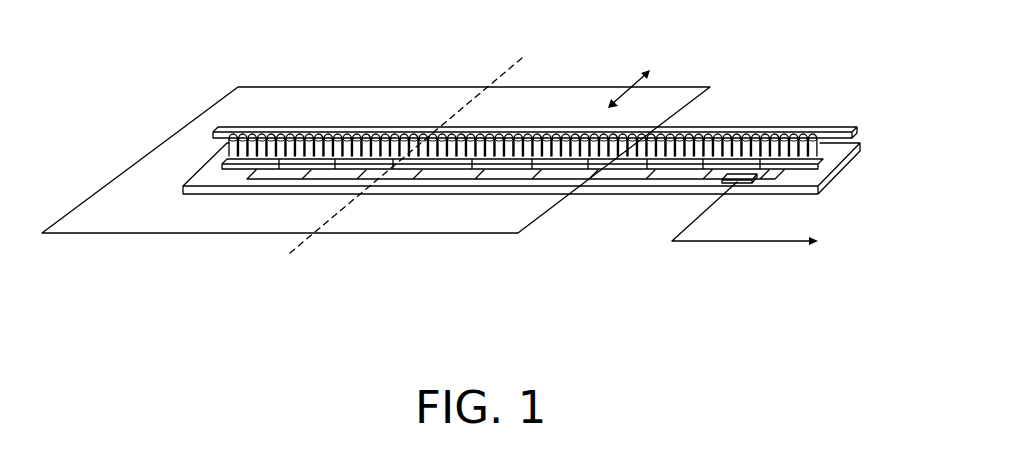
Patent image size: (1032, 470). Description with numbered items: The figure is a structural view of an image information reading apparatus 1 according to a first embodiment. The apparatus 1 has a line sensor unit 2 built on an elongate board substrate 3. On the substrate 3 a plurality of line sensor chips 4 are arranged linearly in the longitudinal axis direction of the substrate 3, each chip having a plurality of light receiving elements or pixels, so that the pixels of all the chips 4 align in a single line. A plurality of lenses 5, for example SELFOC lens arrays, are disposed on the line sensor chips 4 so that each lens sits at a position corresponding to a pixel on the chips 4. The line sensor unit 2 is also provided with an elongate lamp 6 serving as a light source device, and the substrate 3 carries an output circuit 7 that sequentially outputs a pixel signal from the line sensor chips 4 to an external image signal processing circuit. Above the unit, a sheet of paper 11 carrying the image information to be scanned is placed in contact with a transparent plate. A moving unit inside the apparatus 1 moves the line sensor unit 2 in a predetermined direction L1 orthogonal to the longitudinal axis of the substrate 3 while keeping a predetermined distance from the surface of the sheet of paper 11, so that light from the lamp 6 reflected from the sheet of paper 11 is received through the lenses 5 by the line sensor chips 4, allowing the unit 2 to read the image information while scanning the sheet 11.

The image information reading apparatus 1 is at (777, 54).
The line sensor unit 2 is at (548, 185).
The substrate 3 is at (797, 192).
The line sensor chips 4 is at (685, 163).
The lenses 5 is at (823, 156).
The lamp 6 is at (832, 127).
The output circuit 7 is at (746, 184).
The sheet of paper 11 is at (297, 102).
The predetermined direction L1 is at (630, 87).